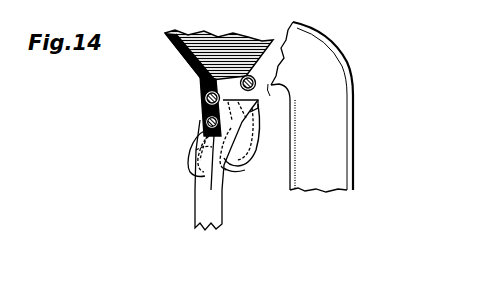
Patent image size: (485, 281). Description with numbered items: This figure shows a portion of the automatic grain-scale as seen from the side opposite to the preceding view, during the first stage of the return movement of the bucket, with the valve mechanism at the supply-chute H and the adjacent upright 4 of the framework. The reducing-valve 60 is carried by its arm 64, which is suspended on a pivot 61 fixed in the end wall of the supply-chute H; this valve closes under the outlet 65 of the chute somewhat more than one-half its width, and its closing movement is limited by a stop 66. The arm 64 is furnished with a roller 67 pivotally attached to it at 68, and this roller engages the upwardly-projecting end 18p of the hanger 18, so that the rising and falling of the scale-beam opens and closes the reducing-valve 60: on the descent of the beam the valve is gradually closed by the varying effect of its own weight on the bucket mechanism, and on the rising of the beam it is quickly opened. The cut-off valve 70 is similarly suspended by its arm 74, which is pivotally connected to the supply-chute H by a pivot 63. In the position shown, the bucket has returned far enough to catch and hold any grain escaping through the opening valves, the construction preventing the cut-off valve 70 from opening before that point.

The supply-chute H is at (189, 52).
The upright 4 is at (337, 120).
The hanger 18 is at (212, 210).
The upwardly-projecting end of hanger 18p is at (257, 109).
The reducing-valve 60 is at (236, 170).
The pivot 61 is at (205, 94).
The pivot 63 is at (206, 122).
The arm of reducing-valve 64 is at (252, 130).
The outlet of chute 65 is at (203, 108).
The stop 66 is at (246, 152).
The roller 67 is at (270, 79).
The roller pivot 68 is at (247, 78).
The cut-off valve 70 is at (190, 170).
The arm of cut-off valve 74 is at (206, 138).